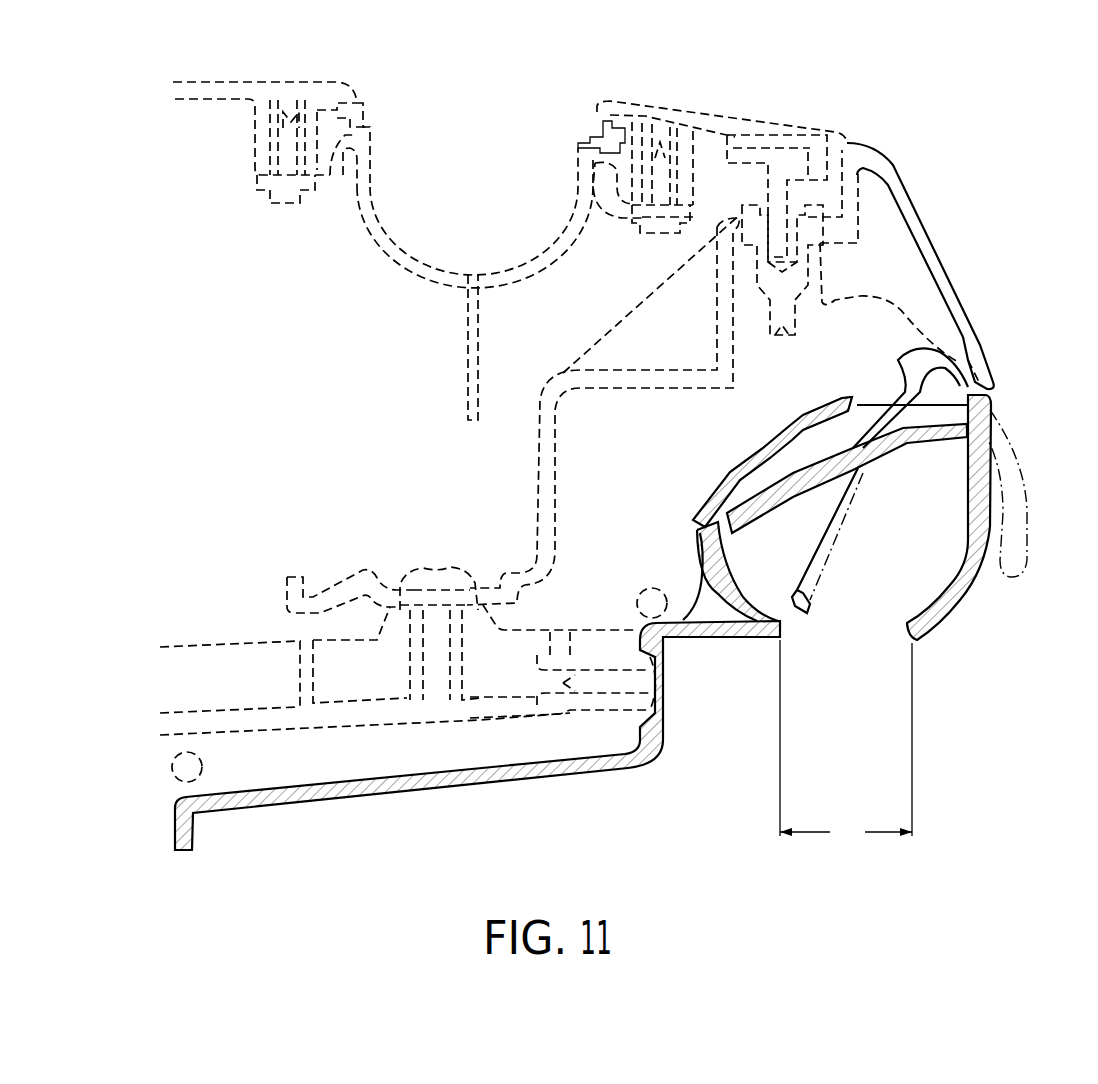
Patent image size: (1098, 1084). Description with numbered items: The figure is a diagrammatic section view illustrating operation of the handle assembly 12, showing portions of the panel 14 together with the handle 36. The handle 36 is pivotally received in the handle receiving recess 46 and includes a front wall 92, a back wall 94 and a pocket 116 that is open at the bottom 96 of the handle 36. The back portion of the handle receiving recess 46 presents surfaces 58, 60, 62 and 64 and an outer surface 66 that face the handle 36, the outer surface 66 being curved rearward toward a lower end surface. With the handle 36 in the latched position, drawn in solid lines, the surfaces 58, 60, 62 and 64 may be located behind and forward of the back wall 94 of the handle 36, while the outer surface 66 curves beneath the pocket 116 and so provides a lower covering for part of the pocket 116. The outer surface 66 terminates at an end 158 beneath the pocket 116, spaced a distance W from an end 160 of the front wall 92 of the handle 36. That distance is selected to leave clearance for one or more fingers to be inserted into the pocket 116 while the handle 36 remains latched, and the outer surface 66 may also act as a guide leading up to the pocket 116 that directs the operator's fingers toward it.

The handle assembly 12 is at (974, 126).
The panel 14 is at (573, 771).
The handle 36 is at (962, 617).
The handle receiving recess 46 is at (850, 660).
The surface 58 is at (812, 410).
The surface 60 is at (806, 433).
The surface 62 is at (750, 483).
The surface 64 is at (748, 492).
The outer surface 66 is at (722, 523).
The front wall 92 is at (985, 507).
The back wall 94 is at (853, 492).
The bottom 96 is at (820, 606).
The pocket 116 is at (893, 606).
The end 158 is at (778, 605).
The end 160 is at (915, 612).